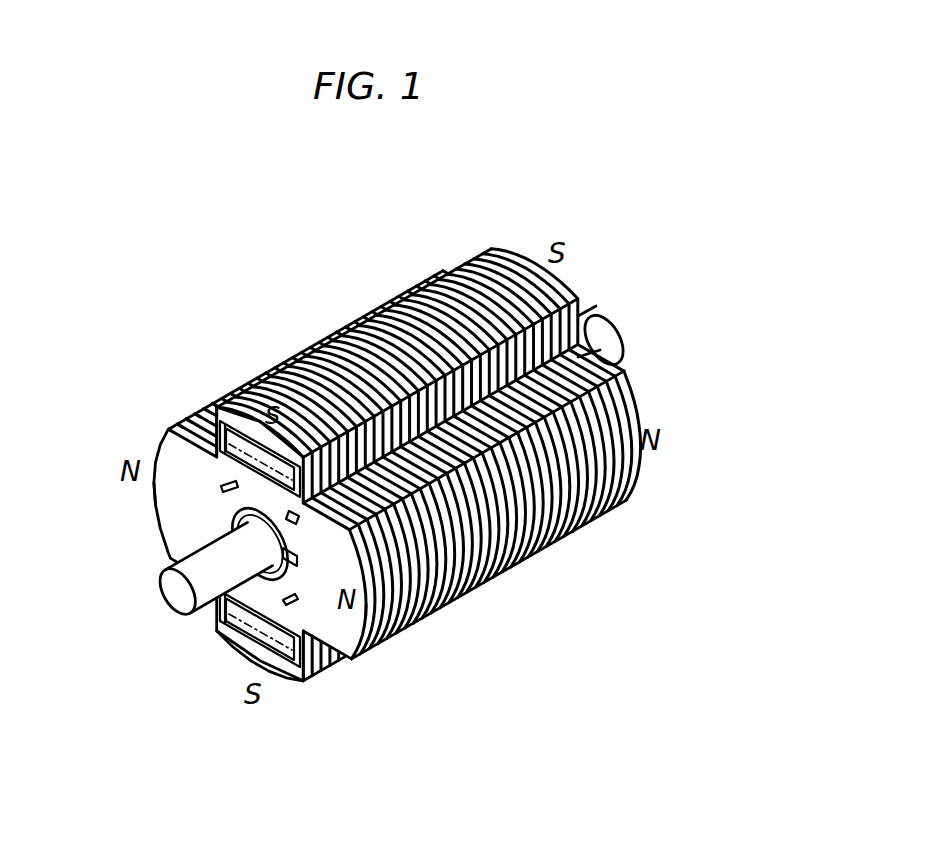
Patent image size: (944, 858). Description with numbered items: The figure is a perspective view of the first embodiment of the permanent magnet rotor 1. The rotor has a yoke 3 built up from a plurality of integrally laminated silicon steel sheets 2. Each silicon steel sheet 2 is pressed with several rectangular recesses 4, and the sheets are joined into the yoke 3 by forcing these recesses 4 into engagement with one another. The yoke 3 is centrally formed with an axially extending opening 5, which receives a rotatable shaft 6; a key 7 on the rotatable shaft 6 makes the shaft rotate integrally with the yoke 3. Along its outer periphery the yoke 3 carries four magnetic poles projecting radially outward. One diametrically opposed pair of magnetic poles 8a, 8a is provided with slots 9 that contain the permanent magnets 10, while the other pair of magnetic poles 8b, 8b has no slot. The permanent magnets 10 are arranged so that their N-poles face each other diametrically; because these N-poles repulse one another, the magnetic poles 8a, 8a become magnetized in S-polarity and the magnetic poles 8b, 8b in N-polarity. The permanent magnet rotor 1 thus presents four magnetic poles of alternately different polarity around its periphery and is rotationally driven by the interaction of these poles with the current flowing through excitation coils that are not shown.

The permanent magnet rotor 1 is at (518, 182).
The silicon steel sheets 2 is at (544, 516).
The yoke 3 is at (407, 284).
The rectangular recesses 4 is at (220, 486).
The opening 5 is at (240, 522).
The rotatable shaft 6 is at (182, 600).
The key 7 is at (302, 568).
The magnetic poles 8a is at (252, 428).
The magnetic poles 8b is at (172, 530).
The slots 9 is at (217, 455).
The permanent magnets 10 is at (236, 462).